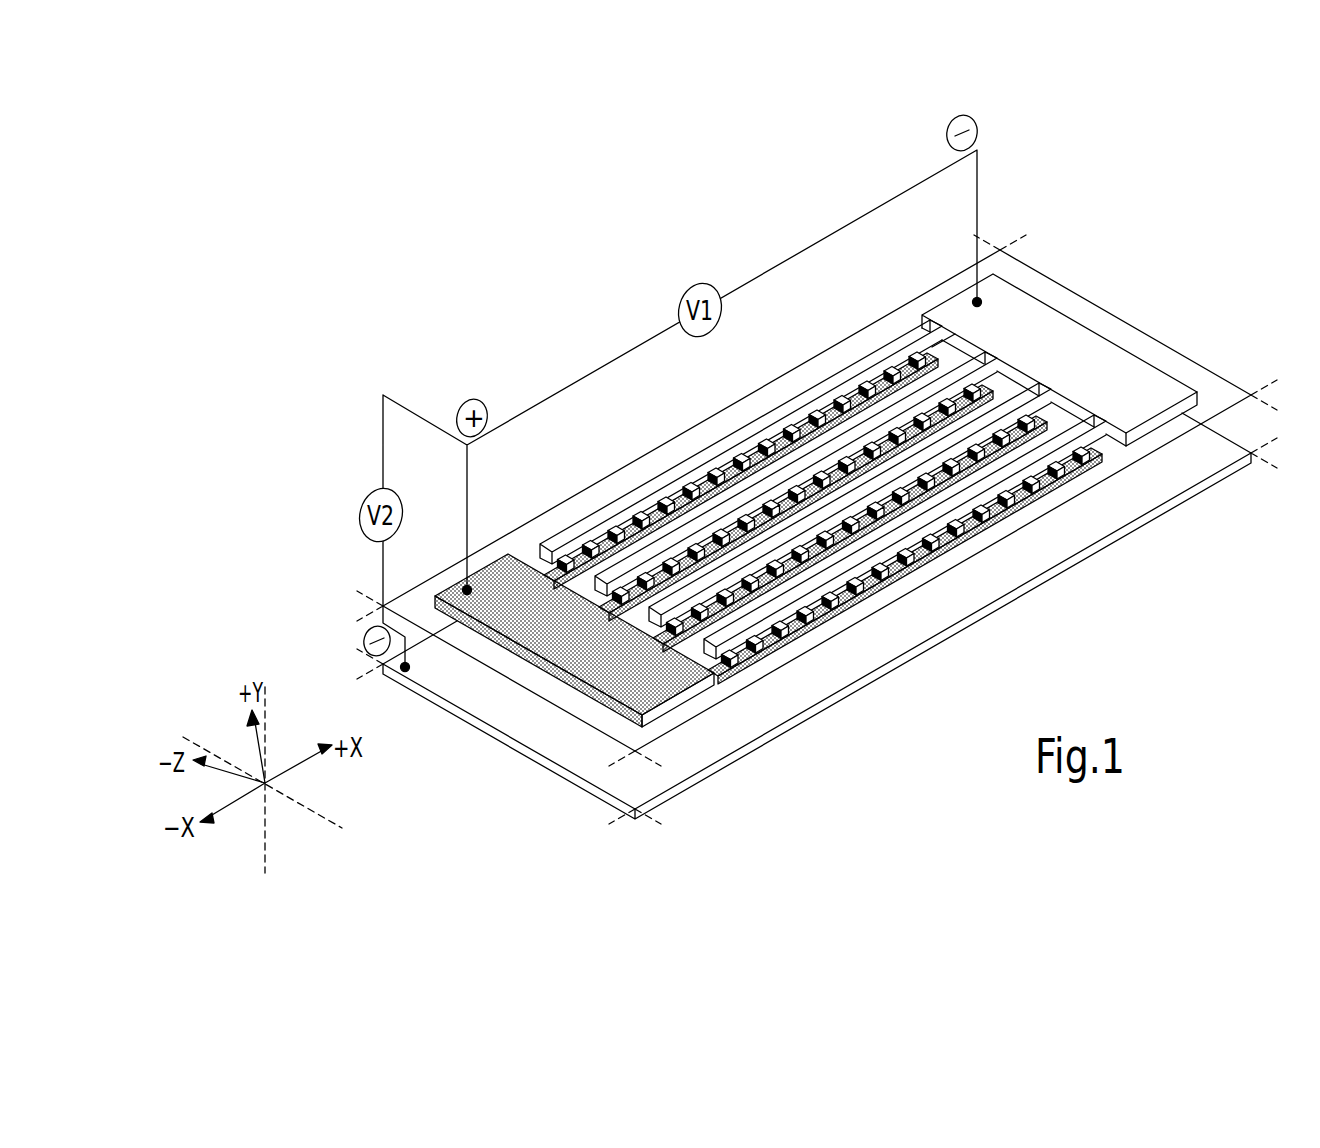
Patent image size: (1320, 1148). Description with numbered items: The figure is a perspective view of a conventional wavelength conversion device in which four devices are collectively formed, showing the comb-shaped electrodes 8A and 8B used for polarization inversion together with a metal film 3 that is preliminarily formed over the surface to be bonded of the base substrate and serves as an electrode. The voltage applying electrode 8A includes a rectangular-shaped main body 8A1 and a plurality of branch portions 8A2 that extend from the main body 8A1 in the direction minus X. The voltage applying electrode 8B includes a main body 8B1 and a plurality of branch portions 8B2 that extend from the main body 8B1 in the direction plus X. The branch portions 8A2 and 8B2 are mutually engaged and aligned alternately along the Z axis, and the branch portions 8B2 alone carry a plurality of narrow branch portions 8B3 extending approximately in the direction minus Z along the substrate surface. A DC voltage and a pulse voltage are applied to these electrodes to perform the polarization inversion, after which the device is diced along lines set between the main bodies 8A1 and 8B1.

The metal film 3 is at (510, 716).
The comb-shaped electrode 8A is at (868, 452).
The main body 8A1 is at (1090, 354).
The branch portions 8A2 is at (1078, 279).
The comb-shaped electrode 8B is at (768, 590).
The main body 8B1 is at (660, 678).
The branch portions 8B2 is at (800, 606).
The narrow branch portions 8B3 is at (890, 583).